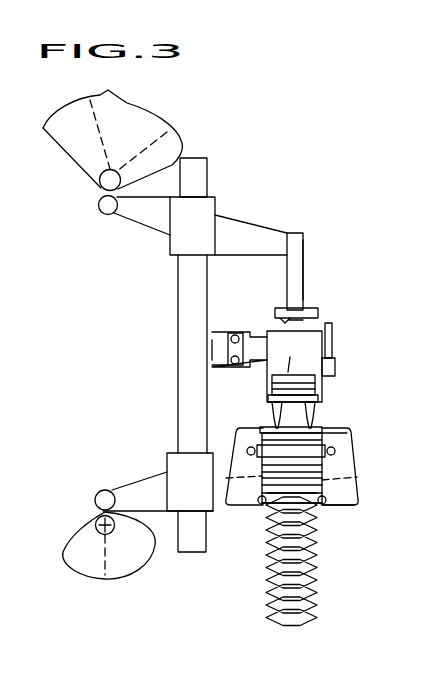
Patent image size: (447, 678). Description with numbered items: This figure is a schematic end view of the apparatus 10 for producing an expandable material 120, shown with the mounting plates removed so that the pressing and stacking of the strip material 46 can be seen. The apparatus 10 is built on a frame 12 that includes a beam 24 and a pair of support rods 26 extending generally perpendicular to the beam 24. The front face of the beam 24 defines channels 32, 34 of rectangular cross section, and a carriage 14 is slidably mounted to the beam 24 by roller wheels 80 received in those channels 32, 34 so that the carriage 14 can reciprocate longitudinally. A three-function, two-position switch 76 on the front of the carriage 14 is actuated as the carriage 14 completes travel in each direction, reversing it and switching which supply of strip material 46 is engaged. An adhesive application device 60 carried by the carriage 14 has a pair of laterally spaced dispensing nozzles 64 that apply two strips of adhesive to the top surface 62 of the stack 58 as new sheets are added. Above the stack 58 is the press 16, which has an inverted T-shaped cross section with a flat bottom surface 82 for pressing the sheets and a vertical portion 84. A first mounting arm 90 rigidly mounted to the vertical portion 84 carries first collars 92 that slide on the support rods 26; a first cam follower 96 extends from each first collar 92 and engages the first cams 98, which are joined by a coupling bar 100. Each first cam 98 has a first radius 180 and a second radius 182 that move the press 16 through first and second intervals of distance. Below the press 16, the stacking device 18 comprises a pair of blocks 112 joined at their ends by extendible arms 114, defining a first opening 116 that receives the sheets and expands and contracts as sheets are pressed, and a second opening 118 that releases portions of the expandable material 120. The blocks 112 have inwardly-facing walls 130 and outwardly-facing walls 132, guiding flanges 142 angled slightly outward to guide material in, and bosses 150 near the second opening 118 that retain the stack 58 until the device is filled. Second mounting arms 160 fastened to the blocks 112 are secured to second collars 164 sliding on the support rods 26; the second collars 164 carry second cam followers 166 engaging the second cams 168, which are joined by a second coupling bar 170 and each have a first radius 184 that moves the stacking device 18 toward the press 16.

The apparatus 10 is at (285, 129).
The frame 12 is at (178, 297).
The carriage 14 is at (321, 331).
The press 16 is at (292, 233).
The stacking device 18 is at (283, 491).
The beam 24 is at (213, 333).
The support rods 26 is at (207, 173).
The channel 32 is at (233, 333).
The channel 34 is at (227, 372).
The strip material 46 is at (323, 388).
The stack 58 is at (269, 558).
The adhesive application device 60 is at (297, 332).
The top surface 62 is at (290, 354).
The dispensing nozzles 64 is at (275, 407).
The three-function, two-position switch 76 is at (335, 340).
The roller wheels 80 is at (210, 357).
The flat bottom surface 82 is at (280, 310).
The vertical portion 84 is at (303, 255).
The first mounting arm 90 is at (240, 220).
The first collars 92 is at (170, 253).
The first cam follower 96 is at (130, 228).
The first cams 98 is at (127, 102).
The coupling bar 100 is at (100, 192).
The blocks 112 is at (237, 453).
The extendible arms 114 is at (330, 440).
The first opening 116 is at (265, 425).
The second opening 118 is at (272, 507).
The expandable material 120 is at (265, 616).
The inwardly-facing walls 130 is at (335, 482).
The outwardly-facing walls 132 is at (360, 492).
The guiding flanges 142 is at (322, 430).
The bosses 150 is at (268, 503).
The second mounting arms 160 is at (116, 519).
The second collar 164 is at (173, 500).
The second cam followers 166 is at (140, 477).
The second cams 168 is at (77, 558).
The second coupling bar 170 is at (93, 520).
The first radius 180 is at (143, 147).
The second radius 182 is at (93, 117).
The first radius 184 is at (100, 547).